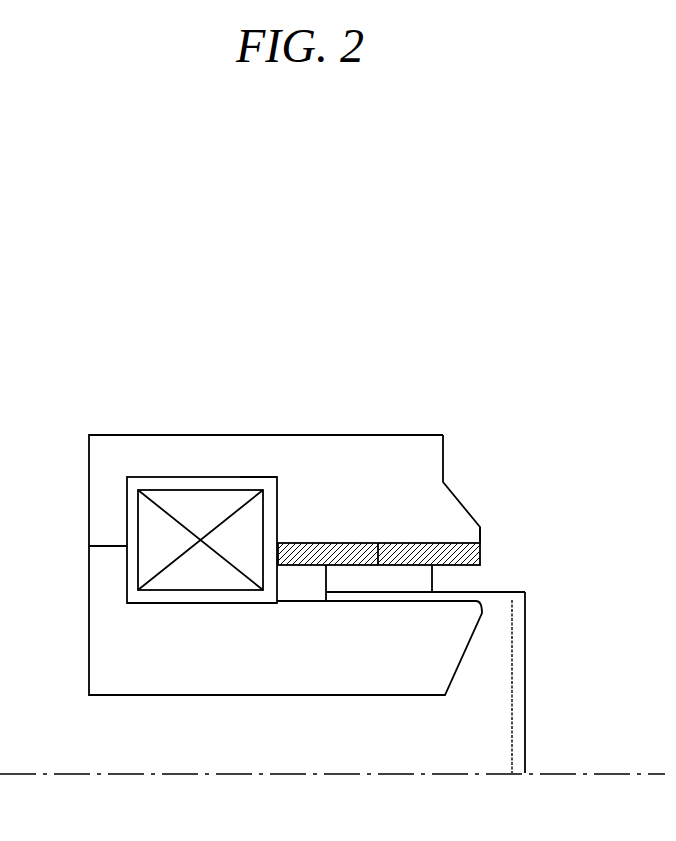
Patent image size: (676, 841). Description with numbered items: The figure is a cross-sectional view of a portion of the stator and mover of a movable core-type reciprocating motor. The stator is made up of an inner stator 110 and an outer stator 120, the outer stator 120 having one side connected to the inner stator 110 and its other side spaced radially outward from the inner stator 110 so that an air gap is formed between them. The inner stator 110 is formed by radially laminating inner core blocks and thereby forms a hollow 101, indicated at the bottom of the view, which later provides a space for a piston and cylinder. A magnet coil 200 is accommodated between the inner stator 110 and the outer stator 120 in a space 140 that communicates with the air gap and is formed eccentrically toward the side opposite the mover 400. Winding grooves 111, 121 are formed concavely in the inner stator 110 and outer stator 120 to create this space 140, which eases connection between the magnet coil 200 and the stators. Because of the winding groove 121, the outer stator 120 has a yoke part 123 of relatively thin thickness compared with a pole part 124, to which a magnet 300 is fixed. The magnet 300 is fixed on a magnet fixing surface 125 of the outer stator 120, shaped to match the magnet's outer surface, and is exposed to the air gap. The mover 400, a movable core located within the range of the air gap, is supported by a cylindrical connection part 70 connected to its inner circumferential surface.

The outer stator 120 is at (458, 350).
The yoke part 123 is at (271, 452).
The pole part 124 is at (462, 508).
The magnet fixing surface 125 is at (458, 540).
The winding groove 121 is at (128, 482).
The magnet coil 200 is at (190, 497).
The space 140 is at (258, 480).
The magnet 300 is at (482, 550).
The mover 400 is at (432, 578).
The connection part 70 is at (527, 700).
The inner stator 110 is at (97, 623).
The winding groove 111 is at (130, 603).
The hollow 101 is at (153, 713).